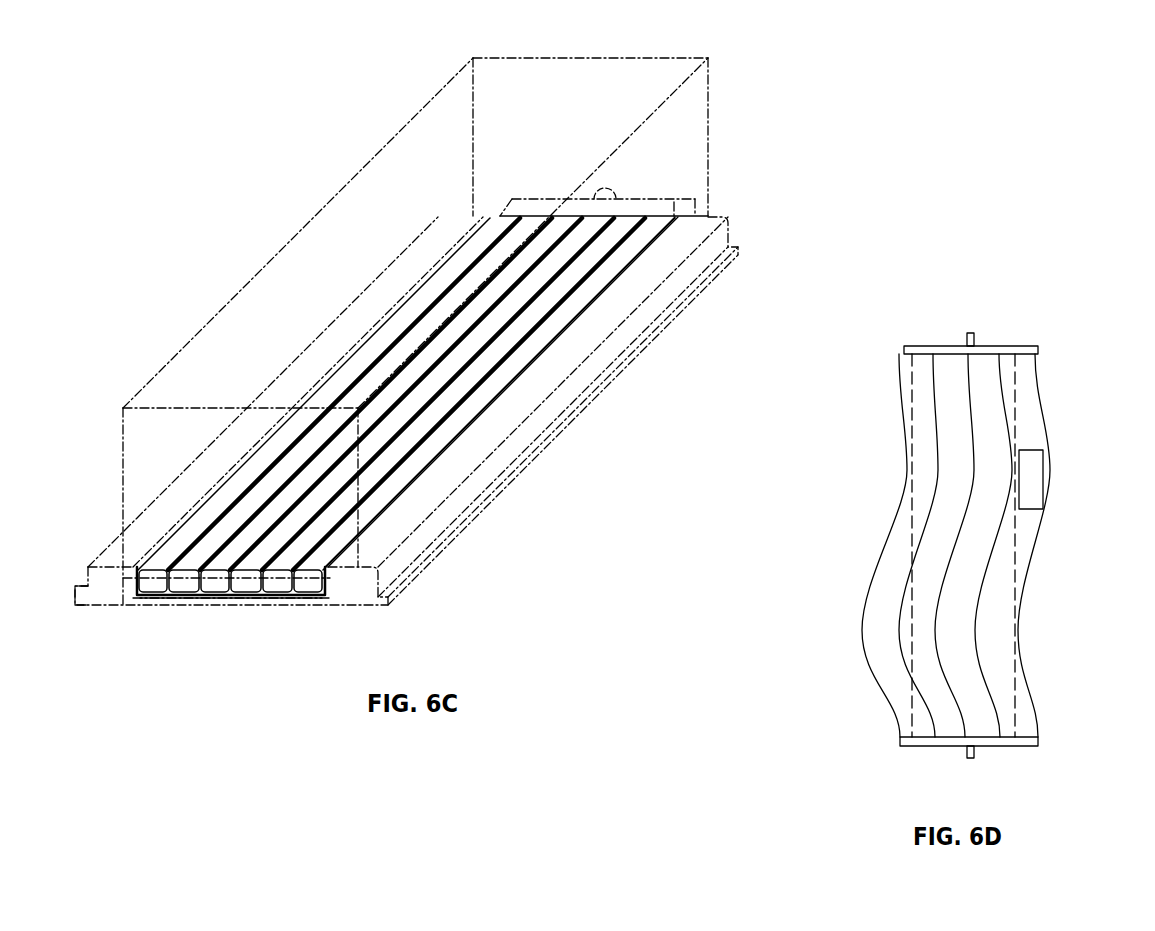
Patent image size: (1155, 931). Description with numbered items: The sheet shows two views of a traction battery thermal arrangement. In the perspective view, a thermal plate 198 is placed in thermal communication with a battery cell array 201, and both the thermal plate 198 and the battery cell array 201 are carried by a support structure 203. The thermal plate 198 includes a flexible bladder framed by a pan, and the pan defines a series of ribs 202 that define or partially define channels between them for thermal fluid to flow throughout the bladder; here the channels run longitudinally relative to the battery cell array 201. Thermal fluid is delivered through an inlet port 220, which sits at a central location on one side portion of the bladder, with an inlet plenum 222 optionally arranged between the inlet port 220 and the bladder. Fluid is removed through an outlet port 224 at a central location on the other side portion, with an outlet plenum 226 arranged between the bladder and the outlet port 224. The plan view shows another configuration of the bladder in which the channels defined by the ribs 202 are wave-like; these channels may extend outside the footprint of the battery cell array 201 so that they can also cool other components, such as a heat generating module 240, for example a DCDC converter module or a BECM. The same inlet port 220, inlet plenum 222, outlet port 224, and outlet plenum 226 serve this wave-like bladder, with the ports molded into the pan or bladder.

In FIG. 6C, the thermal plate 198 is at (335, 576).
In FIG. 6C, the battery cell array 201 is at (229, 335).
In FIG. 6D, the battery cell array 201 is at (912, 466).
In FIG. 6C, the ribs 202 is at (195, 582).
In FIG. 6D, the ribs 202 is at (935, 617).
In FIG. 6C, the support structure 203 is at (78, 603).
In FIG. 6C, the inlet port 220 is at (216, 614).
In FIG. 6D, the inlet port 220 is at (975, 752).
In FIG. 6C, the inlet plenum 222 is at (145, 588).
In FIG. 6D, the inlet plenum 222 is at (1022, 742).
In FIG. 6C, the outlet port 224 is at (612, 188).
In FIG. 6D, the outlet port 224 is at (975, 340).
In FIG. 6C, the outlet plenum 226 is at (684, 201).
In FIG. 6D, the outlet plenum 226 is at (905, 350).
In FIG. 6D, the heat generating module 240 is at (1036, 488).